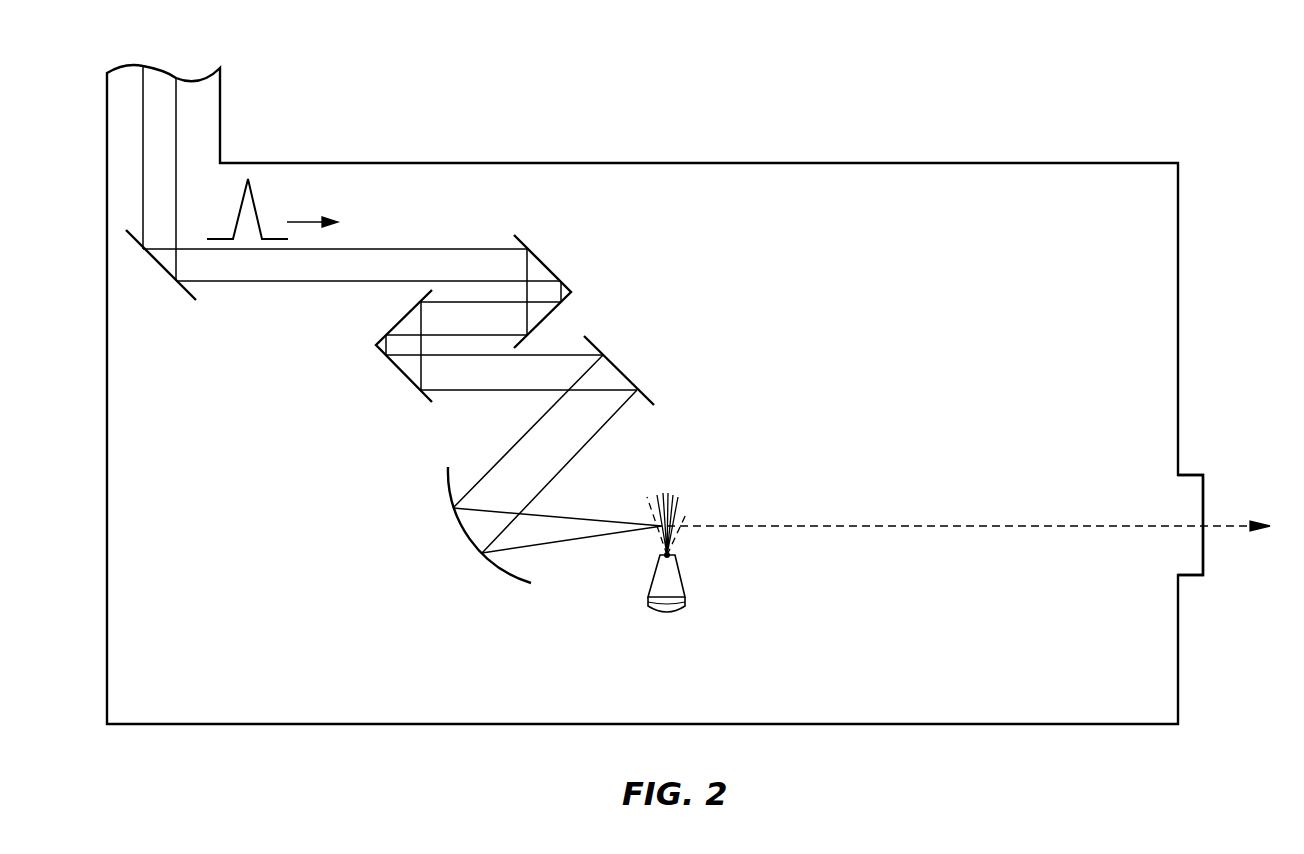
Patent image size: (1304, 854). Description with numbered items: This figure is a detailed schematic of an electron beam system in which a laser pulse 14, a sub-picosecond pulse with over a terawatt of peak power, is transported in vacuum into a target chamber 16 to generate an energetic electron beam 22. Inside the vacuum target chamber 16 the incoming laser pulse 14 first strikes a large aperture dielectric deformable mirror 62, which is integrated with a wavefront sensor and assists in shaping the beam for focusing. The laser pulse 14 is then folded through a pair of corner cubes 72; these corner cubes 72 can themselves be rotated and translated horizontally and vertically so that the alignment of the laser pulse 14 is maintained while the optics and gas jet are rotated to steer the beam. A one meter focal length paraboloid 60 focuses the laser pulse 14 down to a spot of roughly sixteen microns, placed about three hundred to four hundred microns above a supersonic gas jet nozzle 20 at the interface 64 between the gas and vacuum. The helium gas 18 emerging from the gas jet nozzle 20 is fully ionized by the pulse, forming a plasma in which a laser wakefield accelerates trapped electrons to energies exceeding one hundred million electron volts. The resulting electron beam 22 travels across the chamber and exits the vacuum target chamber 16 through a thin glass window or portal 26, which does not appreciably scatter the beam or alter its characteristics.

The laser pulse 14 is at (255, 196).
The target chamber 16 is at (826, 133).
The helium gas 18 is at (682, 503).
The gas jet nozzle 20 is at (665, 606).
The electron beam 22 is at (1125, 522).
The portal 26 is at (1228, 484).
The paraboloid 60 is at (465, 538).
The deformable mirror 62 is at (163, 271).
The interface 64 is at (637, 497).
The corner cubes 72 is at (540, 261).